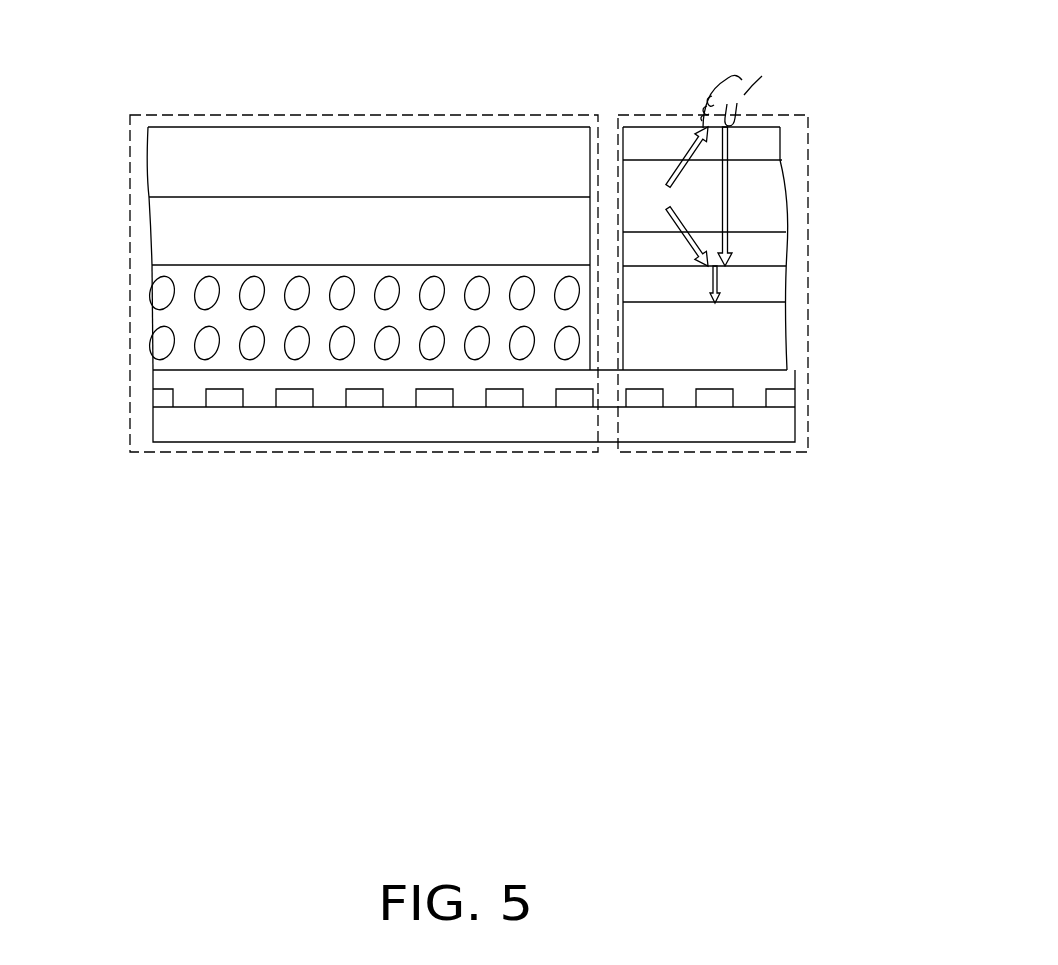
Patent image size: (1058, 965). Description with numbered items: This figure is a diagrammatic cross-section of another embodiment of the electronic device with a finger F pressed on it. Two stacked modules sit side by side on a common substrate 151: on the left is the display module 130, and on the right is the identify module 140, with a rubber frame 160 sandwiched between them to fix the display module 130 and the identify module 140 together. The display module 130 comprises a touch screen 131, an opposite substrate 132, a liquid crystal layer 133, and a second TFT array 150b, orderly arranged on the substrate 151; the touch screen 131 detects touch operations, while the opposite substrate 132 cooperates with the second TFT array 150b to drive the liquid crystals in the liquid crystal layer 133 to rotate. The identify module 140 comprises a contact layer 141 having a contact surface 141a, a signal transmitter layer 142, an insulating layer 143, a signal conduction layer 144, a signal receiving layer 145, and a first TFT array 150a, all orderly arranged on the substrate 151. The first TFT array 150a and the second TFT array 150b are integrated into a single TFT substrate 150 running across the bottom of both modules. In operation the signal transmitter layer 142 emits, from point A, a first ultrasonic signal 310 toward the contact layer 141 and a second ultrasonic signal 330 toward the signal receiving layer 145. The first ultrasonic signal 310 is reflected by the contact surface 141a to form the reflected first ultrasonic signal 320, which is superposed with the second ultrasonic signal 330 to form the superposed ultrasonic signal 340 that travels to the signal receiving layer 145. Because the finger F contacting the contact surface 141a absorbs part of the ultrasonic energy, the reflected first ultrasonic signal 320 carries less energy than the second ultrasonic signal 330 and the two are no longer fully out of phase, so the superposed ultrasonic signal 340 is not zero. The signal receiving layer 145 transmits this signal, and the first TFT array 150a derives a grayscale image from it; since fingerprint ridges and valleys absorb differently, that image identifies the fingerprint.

The display module 130 is at (248, 114).
The touch screen 131 is at (158, 150).
The opposite substrate 132 is at (158, 227).
The liquid crystal layer 133 is at (158, 313).
The identify module 140 is at (692, 115).
The contact layer 141 is at (767, 138).
The contact surface 141a is at (753, 128).
The signal transmitter layer 142 is at (767, 170).
The insulating layer 143 is at (767, 243).
The signal conduction layer 144 is at (767, 278).
The signal receiving layer 145 is at (767, 328).
The TFT substrate 150 is at (637, 503).
The first thin film transistor array 150a is at (748, 397).
The second thin film transistor array 150b is at (391, 397).
The substrate 151 is at (767, 415).
The rubber frame 160 is at (607, 140).
The first ultrasonic signal 310 is at (685, 127).
The reflected first ultrasonic signal 320 is at (737, 126).
The second ultrasonic signal 330 is at (683, 228).
The superposed ultrasonic signal 340 is at (720, 297).
The finger F is at (730, 87).
The point A is at (653, 195).